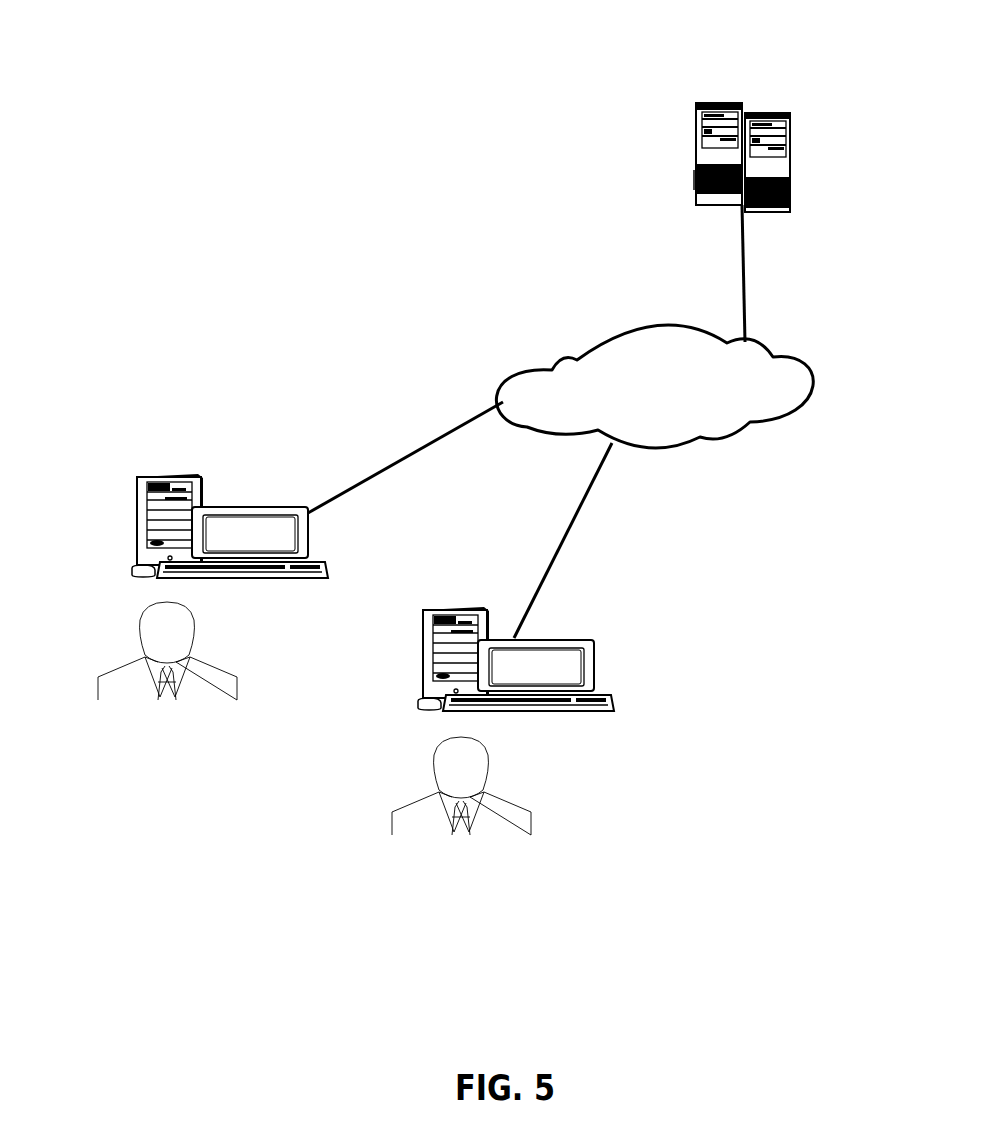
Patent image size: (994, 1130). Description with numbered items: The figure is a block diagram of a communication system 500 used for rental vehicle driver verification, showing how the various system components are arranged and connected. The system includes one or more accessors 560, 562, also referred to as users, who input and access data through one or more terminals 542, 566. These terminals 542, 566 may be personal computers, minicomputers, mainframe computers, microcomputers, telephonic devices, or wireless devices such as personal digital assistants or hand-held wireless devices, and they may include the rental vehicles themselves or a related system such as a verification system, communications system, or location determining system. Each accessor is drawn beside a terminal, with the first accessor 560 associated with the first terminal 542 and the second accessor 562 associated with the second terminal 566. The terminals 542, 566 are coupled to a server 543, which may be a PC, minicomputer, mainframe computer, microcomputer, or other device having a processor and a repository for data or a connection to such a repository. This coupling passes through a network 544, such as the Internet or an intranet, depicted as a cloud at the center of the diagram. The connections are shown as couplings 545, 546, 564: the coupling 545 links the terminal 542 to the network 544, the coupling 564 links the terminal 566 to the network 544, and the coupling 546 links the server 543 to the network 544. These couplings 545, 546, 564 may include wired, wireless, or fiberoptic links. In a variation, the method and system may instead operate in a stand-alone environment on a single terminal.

The communication system 500 is at (180, 62).
The terminal 542 is at (170, 476).
The server 543 is at (722, 103).
The network 544 is at (596, 341).
The coupling 545 is at (350, 490).
The coupling 546 is at (745, 275).
The accessor 560 is at (130, 660).
The accessor 562 is at (508, 800).
The coupling 564 is at (585, 503).
The terminal 566 is at (595, 640).